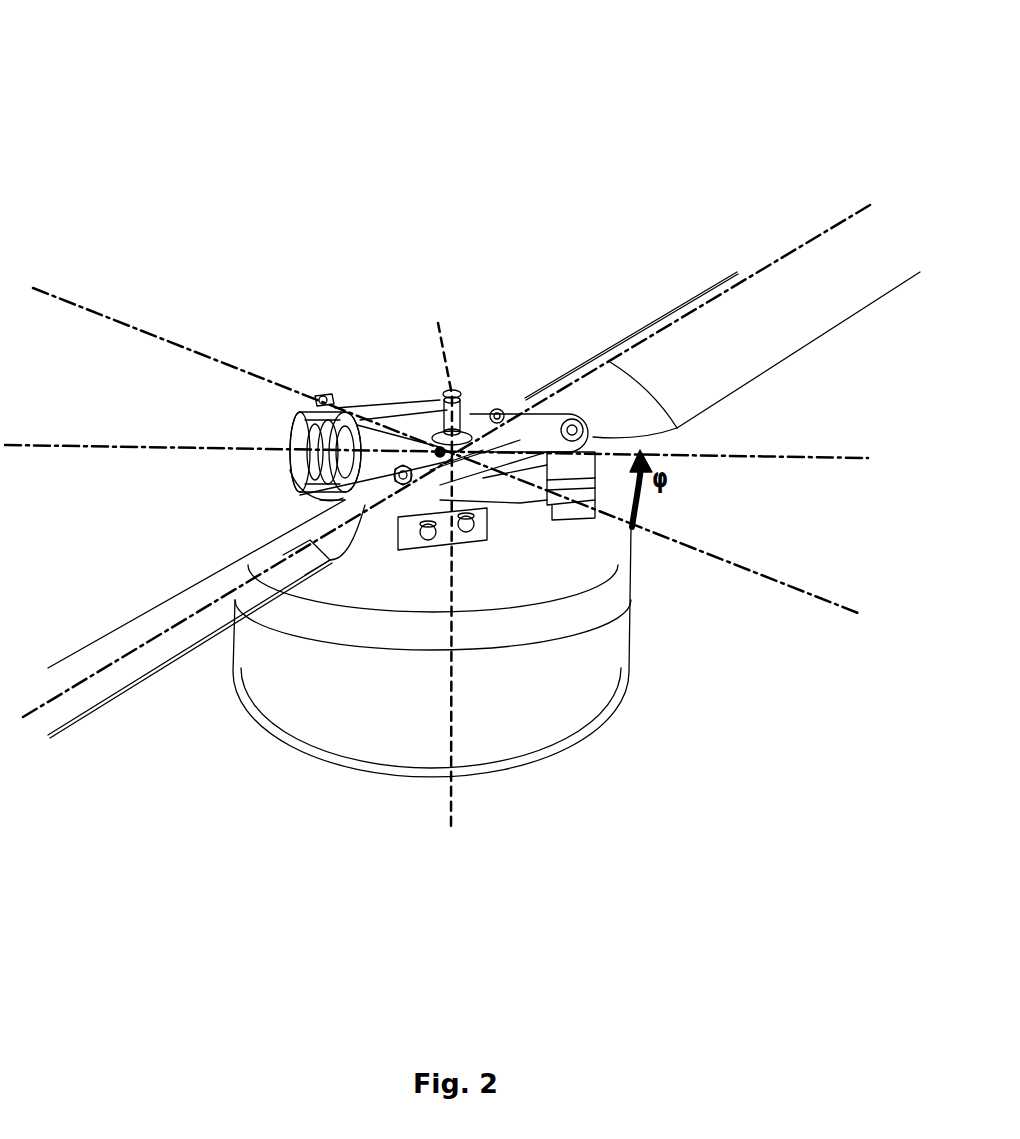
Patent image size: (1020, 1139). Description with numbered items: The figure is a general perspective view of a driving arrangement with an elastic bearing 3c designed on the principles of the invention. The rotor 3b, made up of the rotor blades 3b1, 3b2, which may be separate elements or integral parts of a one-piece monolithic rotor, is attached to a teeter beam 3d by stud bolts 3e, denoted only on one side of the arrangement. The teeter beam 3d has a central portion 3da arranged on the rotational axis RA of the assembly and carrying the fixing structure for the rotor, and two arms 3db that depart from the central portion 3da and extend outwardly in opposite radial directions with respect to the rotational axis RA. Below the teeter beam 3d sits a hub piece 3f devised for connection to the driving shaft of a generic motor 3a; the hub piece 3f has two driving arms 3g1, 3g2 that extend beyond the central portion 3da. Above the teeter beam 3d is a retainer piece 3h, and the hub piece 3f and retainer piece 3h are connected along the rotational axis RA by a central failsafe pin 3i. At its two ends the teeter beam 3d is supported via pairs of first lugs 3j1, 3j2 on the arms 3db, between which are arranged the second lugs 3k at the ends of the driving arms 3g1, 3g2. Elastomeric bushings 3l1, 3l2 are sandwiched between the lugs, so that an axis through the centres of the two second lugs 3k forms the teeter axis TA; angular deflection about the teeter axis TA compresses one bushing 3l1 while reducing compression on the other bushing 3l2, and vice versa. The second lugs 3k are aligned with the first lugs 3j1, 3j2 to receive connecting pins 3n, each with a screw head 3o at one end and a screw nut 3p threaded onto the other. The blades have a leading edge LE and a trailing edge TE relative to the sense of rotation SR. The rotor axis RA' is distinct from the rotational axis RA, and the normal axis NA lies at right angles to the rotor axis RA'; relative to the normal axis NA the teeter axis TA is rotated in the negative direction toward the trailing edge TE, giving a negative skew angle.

The motor 3a is at (640, 697).
The rotor 3b is at (622, 303).
The rotor blade 3b1 is at (90, 632).
The rotor blade 3b2 is at (750, 310).
The bearing 3c is at (268, 97).
The teeter beam 3d is at (395, 402).
The central portion 3da is at (472, 412).
The arm 3db is at (416, 392).
The stud bolt 3e is at (400, 490).
The hub piece 3f is at (523, 525).
The driving arm 3g1 is at (310, 500).
The driving arm 3g2 is at (512, 525).
The retainer piece 3h is at (486, 410).
The failsafe pin 3i is at (455, 395).
The first lug 3j1 is at (325, 432).
The first lug 3j2 is at (333, 477).
The second lug 3k is at (600, 477).
The elastomeric bushing 3l1 is at (325, 428).
The elastomeric bushing 3l2 is at (332, 457).
The connecting pin 3n is at (332, 500).
The screw head 3o is at (340, 487).
The screw nut 3p is at (333, 392).
The normal axis NA is at (110, 320).
The rotational axis RA is at (437, 563).
The rotor axis RA' is at (446, 429).
The leading edge LE is at (700, 292).
The trailing edge TE is at (825, 328).
The sense of rotation SR is at (652, 286).
The teeter axis TA is at (770, 460).